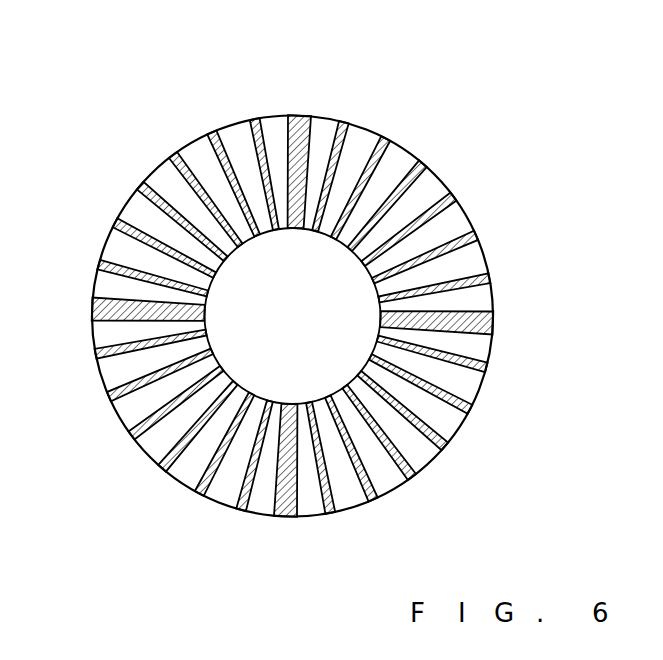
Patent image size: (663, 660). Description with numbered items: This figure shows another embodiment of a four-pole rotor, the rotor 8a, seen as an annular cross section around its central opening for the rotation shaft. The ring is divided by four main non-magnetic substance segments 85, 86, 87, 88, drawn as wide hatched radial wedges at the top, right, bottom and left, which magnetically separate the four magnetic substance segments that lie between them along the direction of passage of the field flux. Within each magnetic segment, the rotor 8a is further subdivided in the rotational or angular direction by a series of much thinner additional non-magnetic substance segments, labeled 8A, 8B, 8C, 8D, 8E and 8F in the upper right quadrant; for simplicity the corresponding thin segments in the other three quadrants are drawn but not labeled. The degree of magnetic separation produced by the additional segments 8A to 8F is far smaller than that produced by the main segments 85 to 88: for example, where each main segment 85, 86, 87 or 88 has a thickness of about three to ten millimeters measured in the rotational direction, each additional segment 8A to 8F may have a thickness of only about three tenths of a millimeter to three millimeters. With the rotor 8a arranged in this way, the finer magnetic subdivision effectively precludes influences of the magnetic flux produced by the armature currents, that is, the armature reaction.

The rotor 8a is at (314, 306).
The main non-magnetic substance segment 85 is at (296, 138).
The main non-magnetic substance segment 86 is at (490, 318).
The main non-magnetic substance segment 87 is at (289, 497).
The main non-magnetic substance segment 88 is at (112, 307).
The additional non-magnetic substance segment 8A is at (345, 125).
The additional non-magnetic substance segment 8B is at (383, 150).
The additional non-magnetic substance segment 8C is at (422, 170).
The additional non-magnetic substance segment 8D is at (447, 198).
The additional non-magnetic substance segment 8E is at (470, 238).
The additional non-magnetic substance segment 8F is at (492, 272).